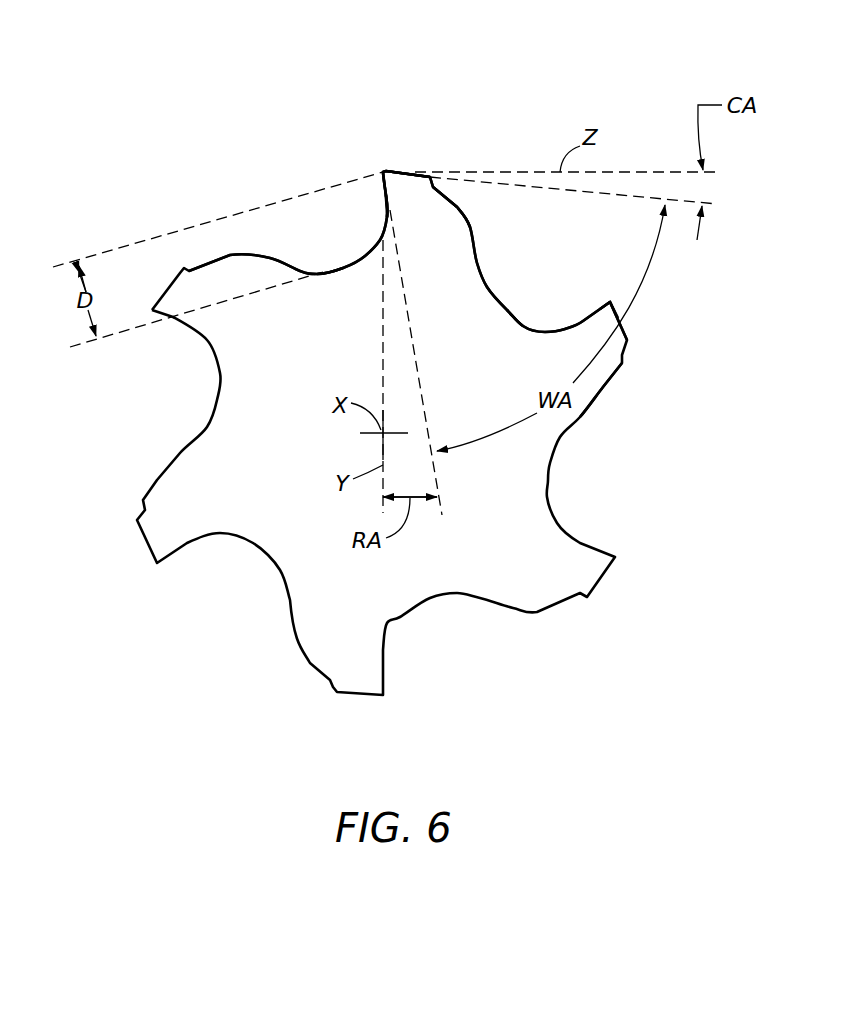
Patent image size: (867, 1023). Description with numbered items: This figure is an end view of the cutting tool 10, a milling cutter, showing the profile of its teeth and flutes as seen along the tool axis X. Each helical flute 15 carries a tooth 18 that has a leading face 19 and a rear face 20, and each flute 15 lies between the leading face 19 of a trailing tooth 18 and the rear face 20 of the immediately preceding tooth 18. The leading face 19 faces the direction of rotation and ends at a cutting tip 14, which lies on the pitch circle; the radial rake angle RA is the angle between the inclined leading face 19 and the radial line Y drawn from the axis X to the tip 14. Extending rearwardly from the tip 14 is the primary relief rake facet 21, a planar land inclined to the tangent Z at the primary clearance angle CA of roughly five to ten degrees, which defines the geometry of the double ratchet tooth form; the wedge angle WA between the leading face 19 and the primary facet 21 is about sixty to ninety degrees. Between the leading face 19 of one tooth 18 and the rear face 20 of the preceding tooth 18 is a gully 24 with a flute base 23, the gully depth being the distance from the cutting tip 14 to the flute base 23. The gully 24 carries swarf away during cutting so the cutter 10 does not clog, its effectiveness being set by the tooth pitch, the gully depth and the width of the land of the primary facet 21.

The cutting tool 10 is at (613, 65).
The cutting tip 14 is at (383, 170).
The helical flute 15 is at (322, 217).
The tooth 18 is at (439, 238).
The leading face 19 is at (387, 211).
The rear face 20 is at (470, 227).
The primary relief rake facet 21 is at (410, 172).
The flute base 23 is at (332, 268).
The gully 24 is at (358, 253).